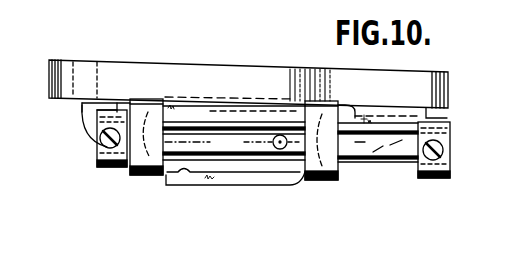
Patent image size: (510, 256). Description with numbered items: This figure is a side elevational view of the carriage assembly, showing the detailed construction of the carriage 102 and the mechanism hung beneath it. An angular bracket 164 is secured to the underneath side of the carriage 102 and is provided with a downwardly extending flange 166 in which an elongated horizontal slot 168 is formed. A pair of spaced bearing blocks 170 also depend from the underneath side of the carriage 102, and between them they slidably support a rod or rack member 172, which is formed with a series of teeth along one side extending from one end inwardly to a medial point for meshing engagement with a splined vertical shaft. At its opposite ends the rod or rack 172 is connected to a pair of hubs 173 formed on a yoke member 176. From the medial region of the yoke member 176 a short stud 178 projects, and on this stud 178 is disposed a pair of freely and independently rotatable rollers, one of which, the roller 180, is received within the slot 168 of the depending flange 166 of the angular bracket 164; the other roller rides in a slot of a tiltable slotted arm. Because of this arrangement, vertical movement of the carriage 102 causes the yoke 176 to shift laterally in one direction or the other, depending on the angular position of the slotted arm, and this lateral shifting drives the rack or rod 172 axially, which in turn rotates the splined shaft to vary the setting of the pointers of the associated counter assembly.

The carriage 102 is at (146, 47).
The angular bracket 164 is at (265, 178).
The downwardly extending flange 166 is at (175, 176).
The elongated horizontal slot 168 is at (195, 173).
The bearing blocks 170 is at (138, 178).
The rod or rack member 172 is at (392, 159).
The hubs 173 is at (100, 168).
The yoke member 176 is at (244, 161).
The stud 178 is at (232, 142).
The roller 180 is at (273, 103).